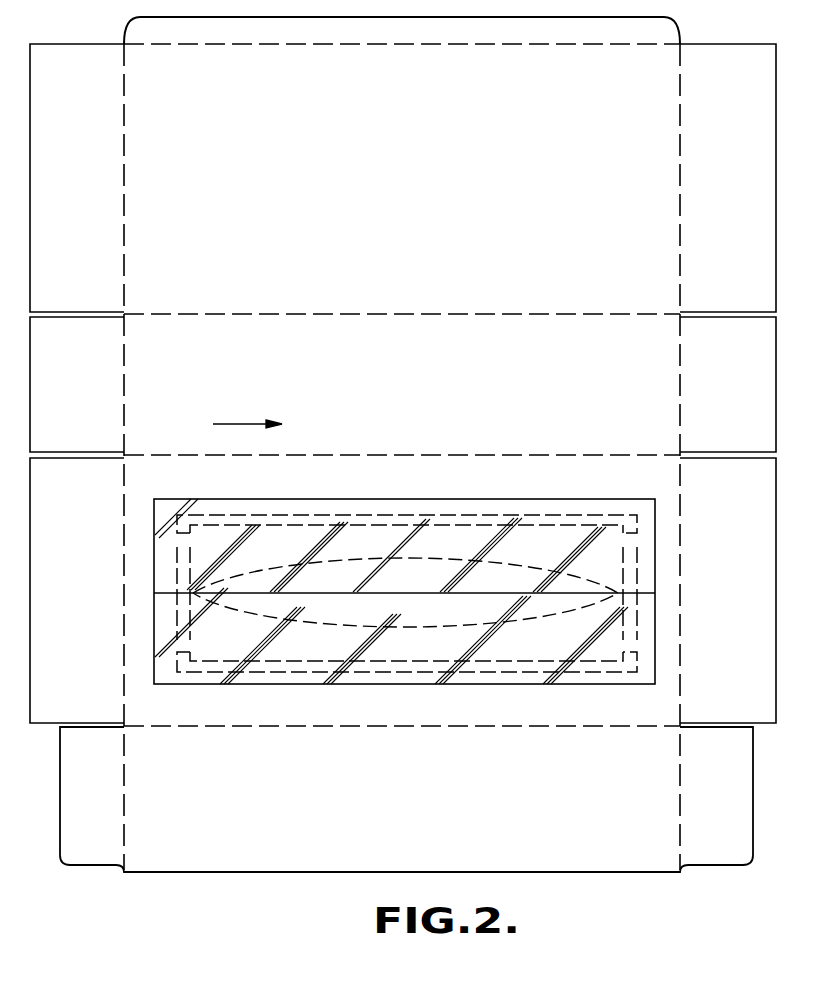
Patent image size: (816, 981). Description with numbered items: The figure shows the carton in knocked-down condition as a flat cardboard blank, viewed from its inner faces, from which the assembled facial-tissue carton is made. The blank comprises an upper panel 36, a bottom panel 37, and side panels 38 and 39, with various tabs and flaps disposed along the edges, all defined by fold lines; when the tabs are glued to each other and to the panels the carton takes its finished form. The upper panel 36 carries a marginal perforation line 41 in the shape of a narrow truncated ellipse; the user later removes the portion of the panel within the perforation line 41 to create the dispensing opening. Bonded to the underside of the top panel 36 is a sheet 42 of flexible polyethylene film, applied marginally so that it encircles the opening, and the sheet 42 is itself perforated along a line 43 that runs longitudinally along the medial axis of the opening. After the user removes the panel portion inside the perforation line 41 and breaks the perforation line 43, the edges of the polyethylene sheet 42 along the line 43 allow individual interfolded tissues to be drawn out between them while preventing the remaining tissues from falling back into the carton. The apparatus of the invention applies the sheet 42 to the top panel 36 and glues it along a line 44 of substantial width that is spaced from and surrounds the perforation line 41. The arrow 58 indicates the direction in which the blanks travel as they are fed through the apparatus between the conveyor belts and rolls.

The bottom panel 37 is at (389, 200).
The side panel 39 is at (408, 410).
The upper panel 36 is at (213, 491).
The side panel 38 is at (414, 803).
The arrow 58 is at (264, 425).
The sheet of flexible polyethylene film 42 is at (429, 499).
The glue line 44 is at (588, 515).
The perforation line 43 is at (318, 594).
The marginal perforation line 41 is at (513, 624).